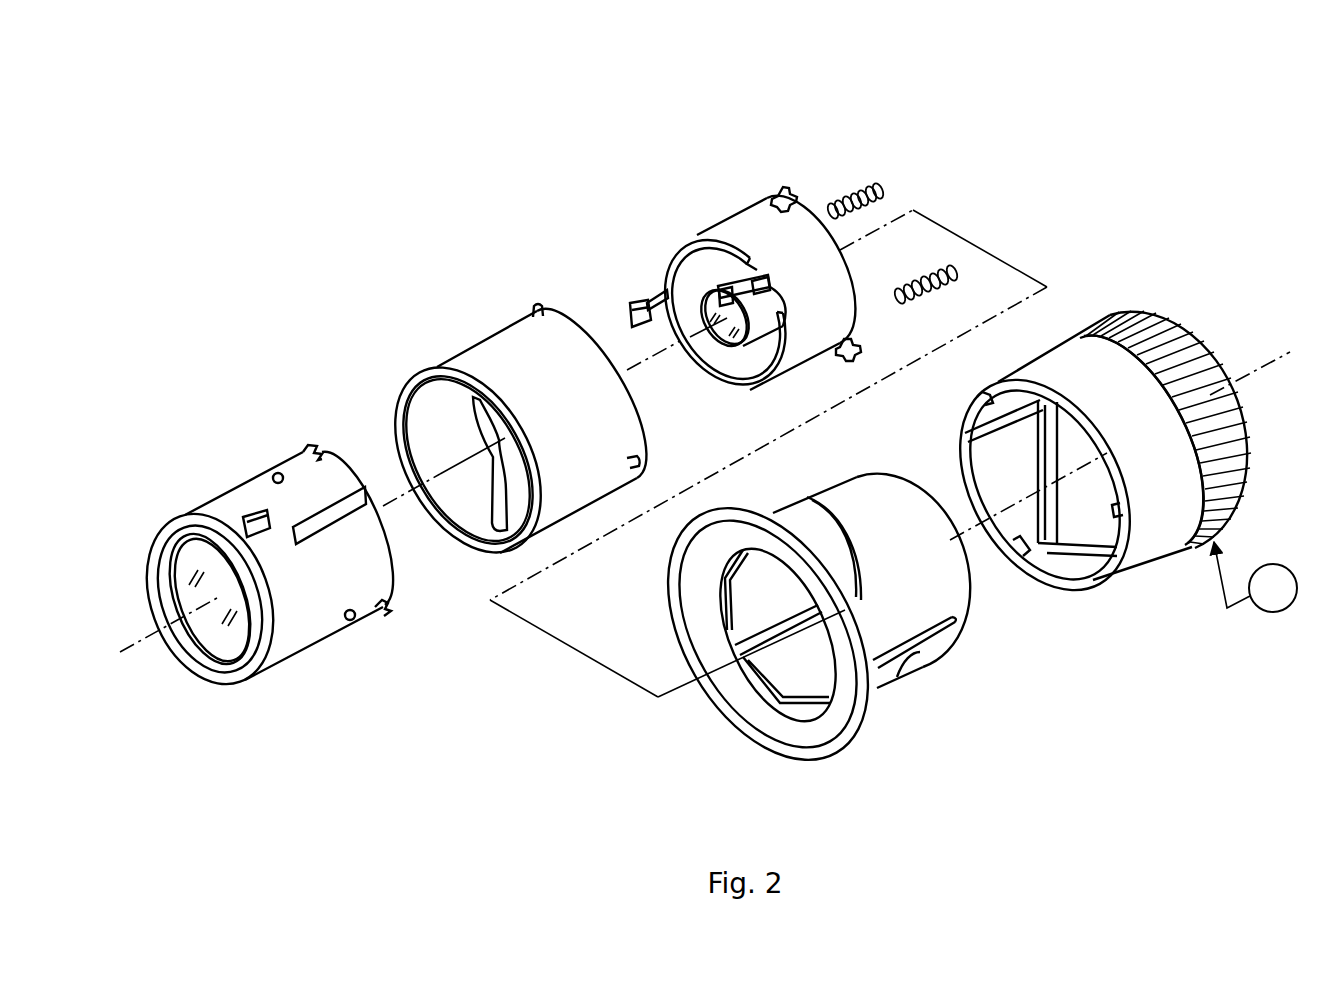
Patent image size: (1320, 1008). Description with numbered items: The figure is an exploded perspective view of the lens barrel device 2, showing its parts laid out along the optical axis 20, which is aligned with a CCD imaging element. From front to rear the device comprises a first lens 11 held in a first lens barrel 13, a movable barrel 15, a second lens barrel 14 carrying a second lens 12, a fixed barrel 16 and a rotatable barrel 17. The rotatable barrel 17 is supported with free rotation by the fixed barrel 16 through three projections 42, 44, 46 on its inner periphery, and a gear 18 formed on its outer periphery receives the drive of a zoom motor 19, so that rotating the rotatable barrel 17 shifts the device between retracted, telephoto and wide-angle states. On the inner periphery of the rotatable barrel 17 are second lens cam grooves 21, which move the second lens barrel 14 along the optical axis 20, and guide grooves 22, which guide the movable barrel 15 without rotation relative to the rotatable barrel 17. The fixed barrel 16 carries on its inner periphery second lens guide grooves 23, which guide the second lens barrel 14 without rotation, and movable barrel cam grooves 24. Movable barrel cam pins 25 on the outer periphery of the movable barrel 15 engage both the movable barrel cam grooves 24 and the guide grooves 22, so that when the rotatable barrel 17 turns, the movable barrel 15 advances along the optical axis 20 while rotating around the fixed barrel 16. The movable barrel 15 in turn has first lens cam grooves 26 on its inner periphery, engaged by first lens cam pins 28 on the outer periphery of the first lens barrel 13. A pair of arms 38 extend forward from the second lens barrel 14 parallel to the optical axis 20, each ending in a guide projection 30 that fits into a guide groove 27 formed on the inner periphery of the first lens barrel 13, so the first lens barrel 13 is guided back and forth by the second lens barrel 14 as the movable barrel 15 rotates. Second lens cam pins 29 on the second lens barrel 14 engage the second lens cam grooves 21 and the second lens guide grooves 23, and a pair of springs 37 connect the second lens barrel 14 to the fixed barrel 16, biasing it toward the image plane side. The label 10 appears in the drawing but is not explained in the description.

The lens barrel device 2 is at (345, 155).
The drive unit 10 is at (1093, 426).
The first lens 11 is at (215, 628).
The second lens 12 is at (716, 330).
The first lens barrel 13 is at (274, 556).
The second lens barrel 14 is at (787, 265).
The movable barrel 15 is at (535, 416).
The fixed barrel 16 is at (798, 633).
The rotatable barrel 17 is at (1093, 483).
The gear 18 is at (1249, 452).
The zoom motor 19 is at (1290, 612).
The optical axis 20 is at (158, 636).
The second lens cam grooves 21 is at (1062, 545).
The guide grooves 22 is at (1020, 418).
The second lens guide grooves 23 is at (775, 632).
The movable barrel cam grooves 24 is at (812, 698).
The movable barrel cam pins 25 is at (535, 310).
The first lens cam grooves 26 is at (490, 505).
The guide grooves 27 is at (358, 512).
The first lens cam pins 28 is at (276, 474).
The second lens cam pins 29 is at (790, 188).
The guide projections 30 is at (722, 280).
The springs 37 is at (888, 190).
The arms 38 is at (665, 302).
The projection 42 is at (962, 398).
The projection 44 is at (1018, 552).
The projection 46 is at (1130, 505).